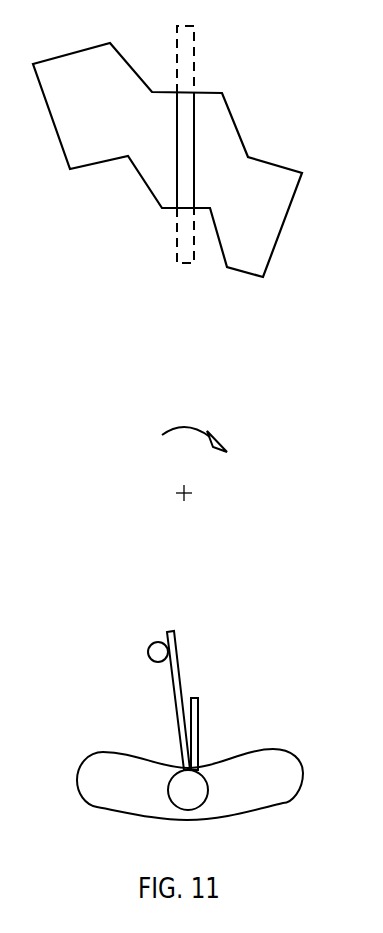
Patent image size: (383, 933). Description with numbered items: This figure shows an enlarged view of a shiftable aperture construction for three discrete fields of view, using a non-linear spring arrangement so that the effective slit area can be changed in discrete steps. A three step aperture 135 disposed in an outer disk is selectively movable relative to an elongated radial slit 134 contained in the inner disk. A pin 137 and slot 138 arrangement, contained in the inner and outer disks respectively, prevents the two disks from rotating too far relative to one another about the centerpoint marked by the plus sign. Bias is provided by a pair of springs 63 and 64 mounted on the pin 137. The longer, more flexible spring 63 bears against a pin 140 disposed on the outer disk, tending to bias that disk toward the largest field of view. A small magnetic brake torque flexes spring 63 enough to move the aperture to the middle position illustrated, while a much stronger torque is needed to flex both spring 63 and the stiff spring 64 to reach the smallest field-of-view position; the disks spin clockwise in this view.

The spring 63 is at (178, 645).
The stiff spring 64 is at (193, 698).
The elongated radial slit 134 is at (195, 43).
The three step aperture 135 is at (267, 160).
The pin 137 is at (207, 778).
The slot 138 is at (133, 755).
The pin 140 is at (150, 643).